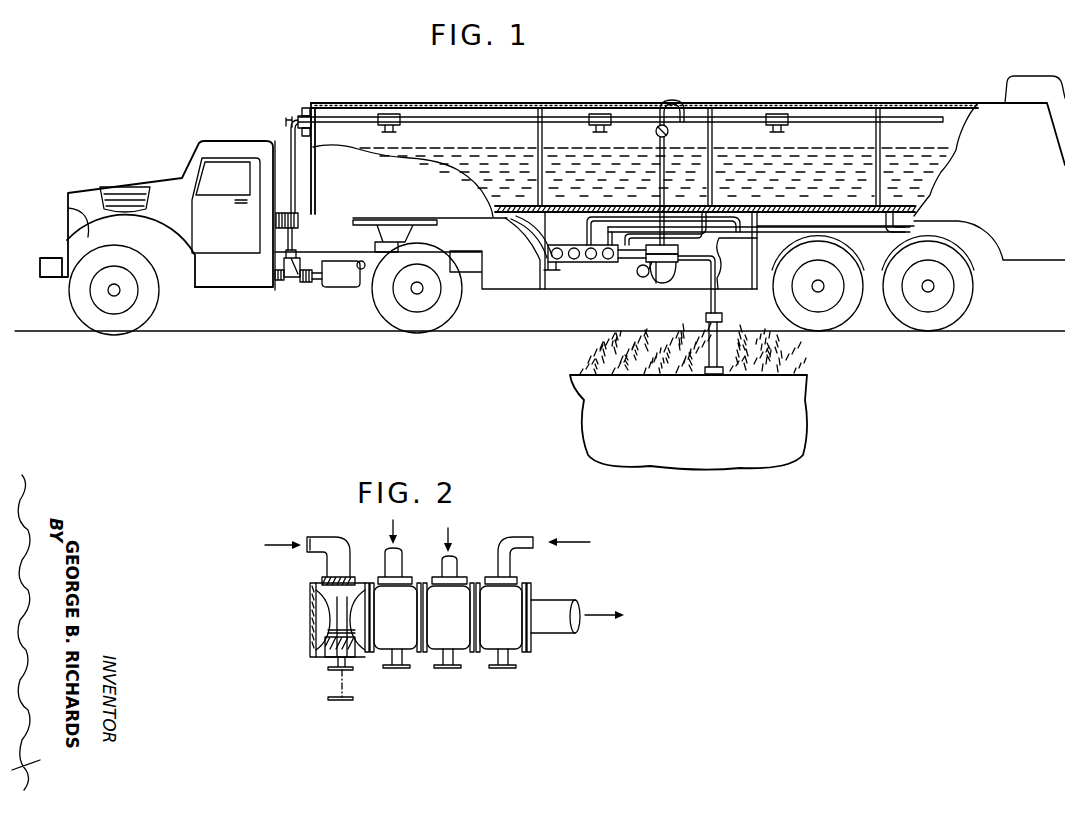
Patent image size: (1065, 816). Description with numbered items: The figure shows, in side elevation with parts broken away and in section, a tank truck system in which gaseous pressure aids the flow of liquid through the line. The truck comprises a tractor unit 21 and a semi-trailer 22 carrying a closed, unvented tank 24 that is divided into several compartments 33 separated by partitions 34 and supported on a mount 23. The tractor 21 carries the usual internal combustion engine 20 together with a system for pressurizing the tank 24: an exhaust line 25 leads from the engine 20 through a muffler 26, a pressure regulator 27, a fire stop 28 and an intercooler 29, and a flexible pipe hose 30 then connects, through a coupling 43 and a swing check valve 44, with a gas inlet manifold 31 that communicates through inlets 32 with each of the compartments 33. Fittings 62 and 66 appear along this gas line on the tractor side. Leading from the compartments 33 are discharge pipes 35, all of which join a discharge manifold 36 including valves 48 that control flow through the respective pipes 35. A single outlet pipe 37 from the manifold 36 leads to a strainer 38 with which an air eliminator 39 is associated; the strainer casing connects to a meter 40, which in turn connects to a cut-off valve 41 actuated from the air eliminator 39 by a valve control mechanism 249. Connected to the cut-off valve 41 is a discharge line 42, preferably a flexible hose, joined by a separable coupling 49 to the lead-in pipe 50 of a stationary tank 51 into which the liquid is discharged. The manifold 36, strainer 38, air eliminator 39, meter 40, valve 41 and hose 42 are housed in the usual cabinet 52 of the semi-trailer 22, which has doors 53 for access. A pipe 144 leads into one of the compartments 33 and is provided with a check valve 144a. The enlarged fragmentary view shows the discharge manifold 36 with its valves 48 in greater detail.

In FIG. 1, the internal combustion engine 20 is at (120, 200).
In FIG. 1, the tractor unit 21 is at (176, 170).
In FIG. 1, the semi-trailer 22 is at (720, 93).
In FIG. 1, the tank mounting bracket 23 is at (422, 226).
In FIG. 1, the tank 24 is at (482, 103).
In FIG. 1, the exhaust line 25 is at (288, 283).
In FIG. 1, the muffler 26 is at (346, 283).
In FIG. 1, the pressure regulator 27 is at (306, 290).
In FIG. 1, the fire stop 28 is at (287, 258).
In FIG. 1, the intercooler 29 is at (300, 219).
In FIG. 1, the flexible pipe hose 30 is at (291, 142).
In FIG. 1, the gas inlet manifold 31 is at (358, 117).
In FIG. 1, the inlets 32 is at (396, 115).
In FIG. 1, the compartments 33 is at (460, 145).
In FIG. 1, the partitions 34 is at (538, 137).
In FIG. 1, the discharge pipes 35 is at (526, 238).
In FIG. 1, the discharge manifold 36 is at (578, 263).
In FIG. 1, the outlet pipe 37 is at (636, 262).
In FIG. 1, the strainer 38 is at (643, 278).
In FIG. 1, the air eliminator 39 is at (675, 248).
In FIG. 1, the meter 40 is at (664, 284).
In FIG. 1, the cut-off valve 41 is at (688, 265).
In FIG. 1, the discharge line 42 is at (717, 297).
In FIG. 1, the coupling 43 is at (303, 112).
In FIG. 1, the swing check valve 44 is at (313, 108).
In FIG. 1, the valves 48 is at (547, 261).
In FIG. 2, the valves 48 is at (330, 669).
In FIG. 1, the separable coupling 49 is at (723, 318).
In FIG. 1, the lead-in pipe 50 is at (735, 356).
In FIG. 1, the stationary tank 51 is at (803, 400).
In FIG. 1, the cabinet 52 is at (581, 289).
In FIG. 1, the doors 53 is at (757, 252).
In FIG. 1, the fitting 62 is at (281, 279).
In FIG. 1, the conduit 66 is at (294, 246).
In FIG. 1, the pipe 144 is at (689, 107).
In FIG. 1, the check valve 144a is at (656, 133).
In FIG. 1, the valve control mechanism 249 is at (654, 284).